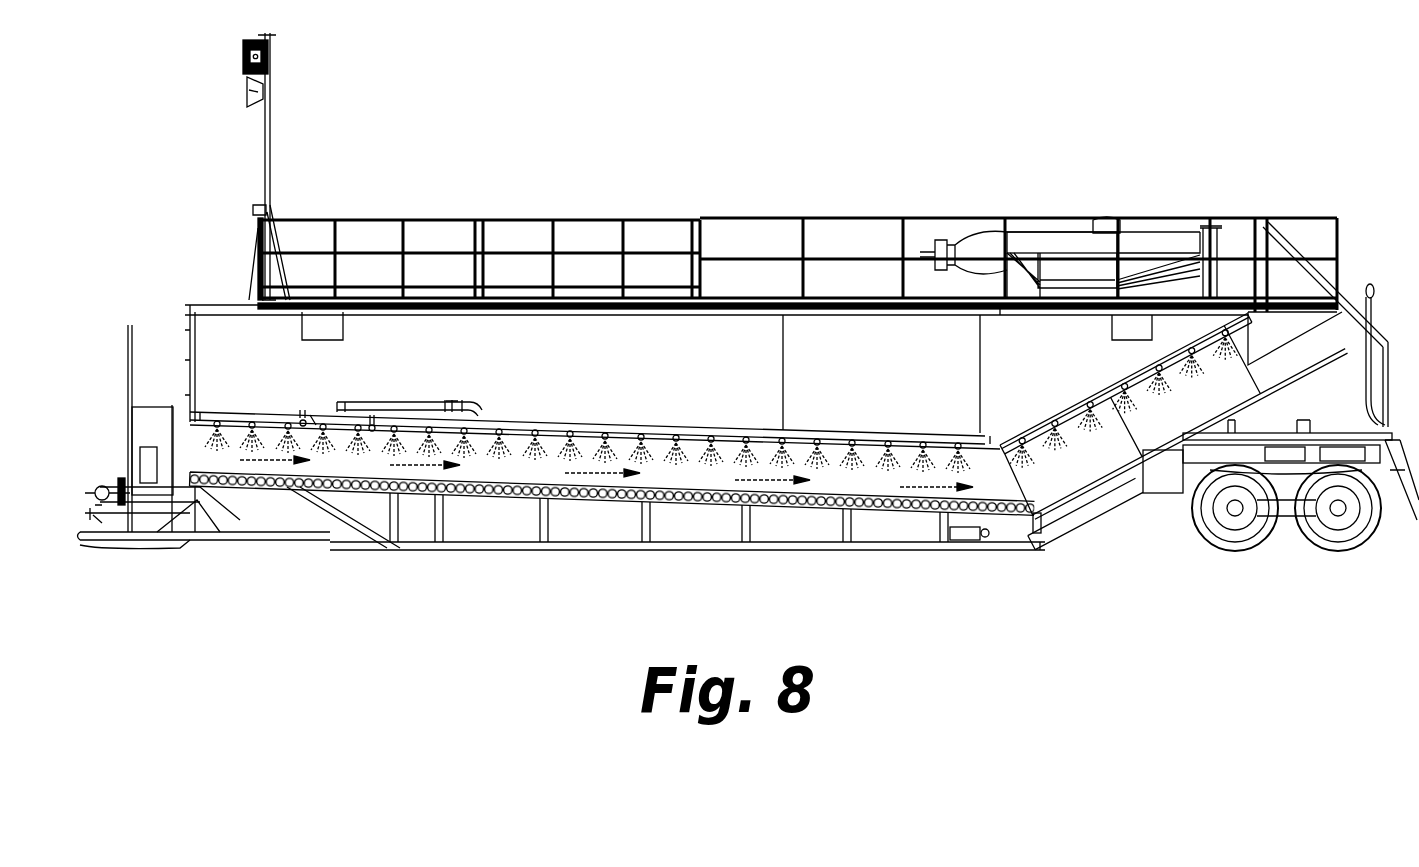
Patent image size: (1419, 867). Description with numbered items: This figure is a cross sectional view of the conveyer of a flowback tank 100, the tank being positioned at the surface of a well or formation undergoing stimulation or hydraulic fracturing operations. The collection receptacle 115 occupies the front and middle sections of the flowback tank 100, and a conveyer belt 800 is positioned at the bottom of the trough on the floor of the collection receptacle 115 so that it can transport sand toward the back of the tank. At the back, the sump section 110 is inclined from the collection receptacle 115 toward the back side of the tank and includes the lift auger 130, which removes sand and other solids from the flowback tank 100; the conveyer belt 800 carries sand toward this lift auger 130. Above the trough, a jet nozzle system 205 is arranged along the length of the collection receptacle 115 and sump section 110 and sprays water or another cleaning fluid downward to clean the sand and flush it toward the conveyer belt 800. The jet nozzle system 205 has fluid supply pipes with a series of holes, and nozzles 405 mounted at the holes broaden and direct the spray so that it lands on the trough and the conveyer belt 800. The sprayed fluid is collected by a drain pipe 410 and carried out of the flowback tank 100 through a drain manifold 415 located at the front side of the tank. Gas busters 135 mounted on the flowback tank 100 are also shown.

The flowback tank 100 is at (605, 130).
The sump section 110 is at (1140, 520).
The collection receptacle 115 is at (550, 575).
The lift auger 130 is at (1213, 412).
The gas busters 135 is at (1055, 245).
The jet nozzle system 205 is at (704, 406).
The nozzles 405 is at (798, 428).
The drain pipe 410 is at (482, 410).
The drain manifold 415 is at (103, 487).
The conveyer belt 800 is at (886, 505).